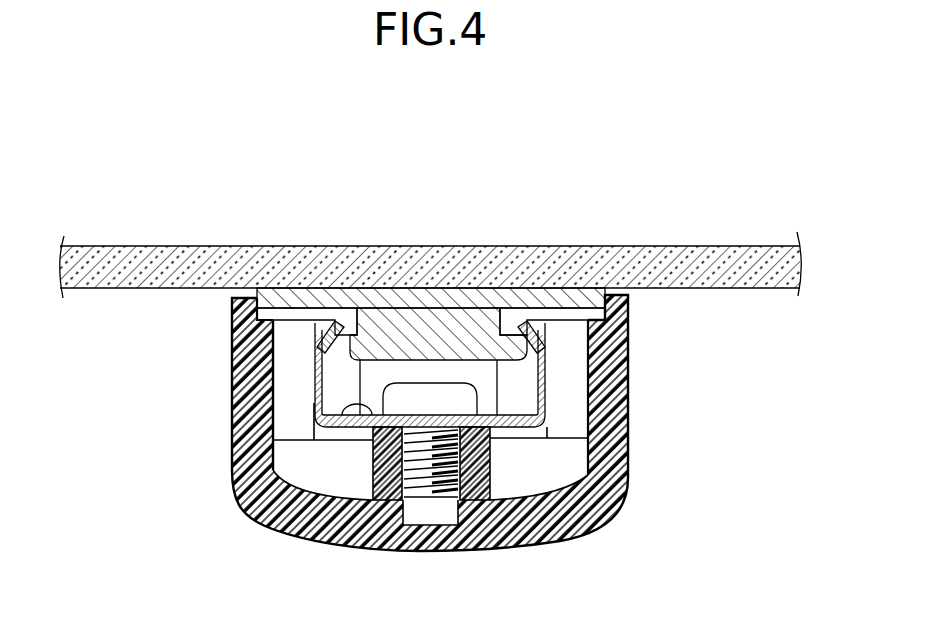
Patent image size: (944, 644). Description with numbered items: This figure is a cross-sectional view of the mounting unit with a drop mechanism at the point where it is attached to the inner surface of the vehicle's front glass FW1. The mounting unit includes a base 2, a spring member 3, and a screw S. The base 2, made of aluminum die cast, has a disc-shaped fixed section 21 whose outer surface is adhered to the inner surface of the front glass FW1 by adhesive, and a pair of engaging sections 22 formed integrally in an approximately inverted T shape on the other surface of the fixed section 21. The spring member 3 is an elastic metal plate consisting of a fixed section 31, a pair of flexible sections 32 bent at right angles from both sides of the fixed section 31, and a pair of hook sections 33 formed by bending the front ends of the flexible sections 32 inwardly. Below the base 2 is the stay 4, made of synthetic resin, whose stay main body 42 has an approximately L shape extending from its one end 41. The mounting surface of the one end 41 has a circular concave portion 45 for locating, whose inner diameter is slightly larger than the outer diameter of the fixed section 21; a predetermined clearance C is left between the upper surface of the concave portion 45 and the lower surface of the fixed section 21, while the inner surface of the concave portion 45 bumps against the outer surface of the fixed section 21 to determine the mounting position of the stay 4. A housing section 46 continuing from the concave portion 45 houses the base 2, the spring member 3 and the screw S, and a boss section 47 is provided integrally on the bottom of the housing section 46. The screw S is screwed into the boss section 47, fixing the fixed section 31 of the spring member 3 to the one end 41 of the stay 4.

The front glass FW1 is at (148, 246).
The base 2 is at (431, 227).
The fixed section 21 is at (434, 320).
The engaging sections 22 is at (522, 141).
The spring member 3 is at (410, 306).
The fixed section 31 is at (338, 440).
The flexible sections 32 is at (318, 393).
The hook sections 33 is at (320, 320).
The stay 4 is at (438, 450).
The one end 41 is at (232, 352).
The stay main body 42 is at (573, 533).
The circular concave portion 45 is at (592, 322).
The housing section 46 is at (573, 458).
The boss section 47 is at (488, 460).
The screw S is at (415, 503).
The clearance C is at (592, 350).